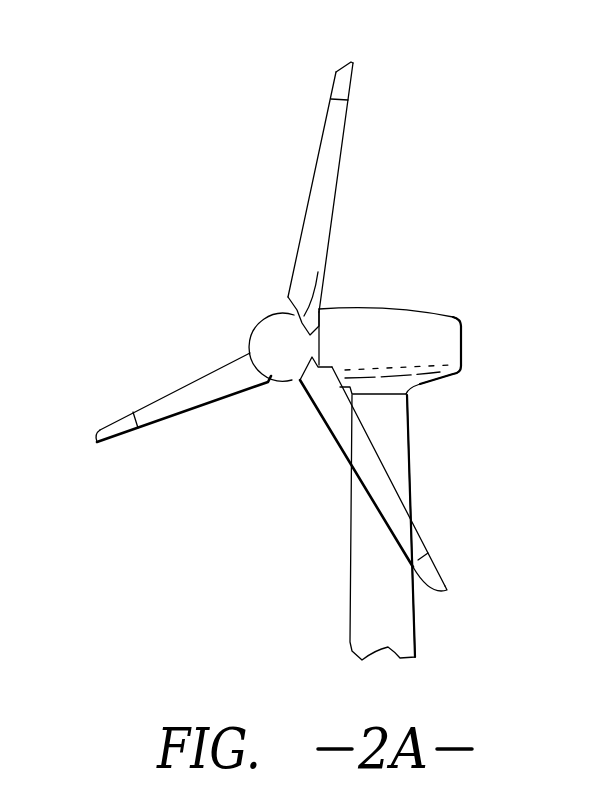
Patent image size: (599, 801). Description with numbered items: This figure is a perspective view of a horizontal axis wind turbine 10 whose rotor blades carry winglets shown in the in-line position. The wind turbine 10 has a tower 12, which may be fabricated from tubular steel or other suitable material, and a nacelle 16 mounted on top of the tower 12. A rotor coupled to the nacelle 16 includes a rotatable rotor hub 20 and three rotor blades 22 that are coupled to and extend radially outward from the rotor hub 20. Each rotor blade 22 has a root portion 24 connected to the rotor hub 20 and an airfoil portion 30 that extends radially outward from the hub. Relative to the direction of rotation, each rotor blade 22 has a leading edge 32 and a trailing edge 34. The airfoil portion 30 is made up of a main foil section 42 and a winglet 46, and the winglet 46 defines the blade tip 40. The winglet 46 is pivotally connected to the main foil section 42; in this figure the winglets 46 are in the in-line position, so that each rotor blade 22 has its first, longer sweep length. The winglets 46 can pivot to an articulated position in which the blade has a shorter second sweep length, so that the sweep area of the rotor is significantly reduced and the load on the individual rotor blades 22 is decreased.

The wind turbine 10 is at (494, 169).
The tower 12 is at (358, 555).
The nacelle 16 is at (433, 330).
The rotor hub 20 is at (276, 330).
The rotor blade 22 is at (418, 531).
The root portion 24 is at (321, 284).
The airfoil portion 30 is at (311, 248).
The leading edge 32 is at (331, 219).
The trailing edge 34 is at (314, 164).
The blade tip 40 is at (349, 62).
The main foil section 42 is at (334, 146).
The winglet 46 is at (343, 84).